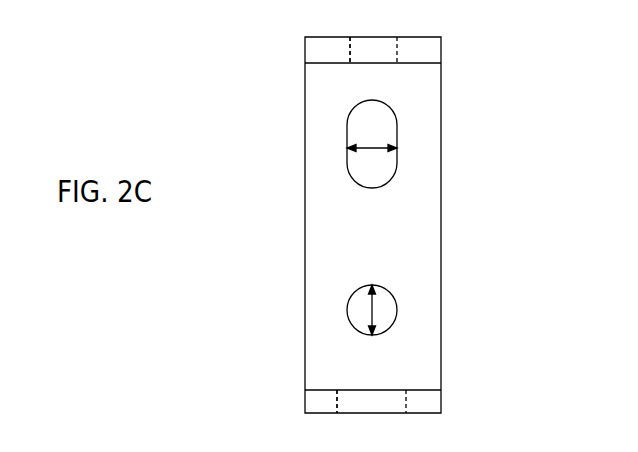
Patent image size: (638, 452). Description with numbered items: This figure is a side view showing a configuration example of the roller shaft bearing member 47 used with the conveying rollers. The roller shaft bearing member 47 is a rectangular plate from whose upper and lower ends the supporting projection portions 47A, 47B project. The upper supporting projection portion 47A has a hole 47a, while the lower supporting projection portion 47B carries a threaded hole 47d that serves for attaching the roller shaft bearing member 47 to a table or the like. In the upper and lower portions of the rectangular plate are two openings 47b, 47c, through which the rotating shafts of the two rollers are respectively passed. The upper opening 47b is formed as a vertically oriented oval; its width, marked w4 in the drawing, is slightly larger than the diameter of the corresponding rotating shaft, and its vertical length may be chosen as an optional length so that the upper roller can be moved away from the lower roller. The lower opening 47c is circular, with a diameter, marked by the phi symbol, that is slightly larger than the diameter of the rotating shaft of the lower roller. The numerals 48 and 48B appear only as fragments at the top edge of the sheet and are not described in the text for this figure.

The roller shaft bearing member 47 is at (305, 242).
The supporting projection portion 47A is at (422, 51).
The supporting projection portion 47B is at (440, 400).
The hole 47a is at (360, 60).
The opening 47b is at (372, 183).
The opening 47c is at (360, 325).
The threaded hole 47d is at (345, 390).
The adjacent member (partial) 48 is at (111, 4).
The adjacent member end portion (partial) 48B is at (168, 11).